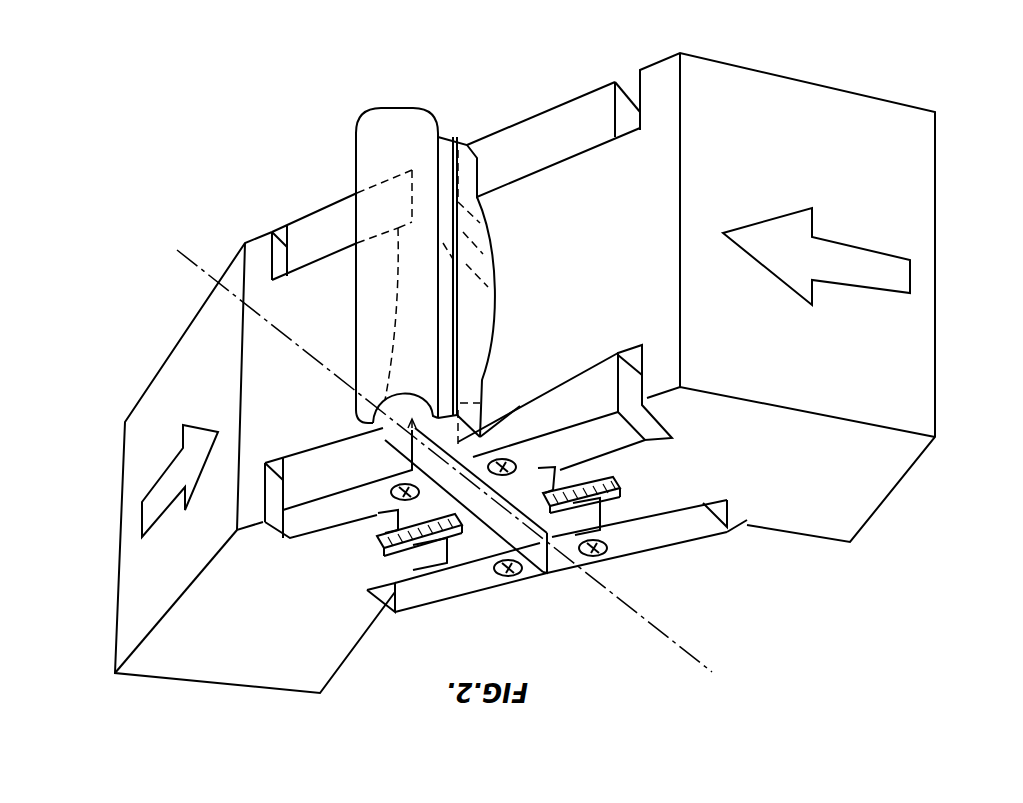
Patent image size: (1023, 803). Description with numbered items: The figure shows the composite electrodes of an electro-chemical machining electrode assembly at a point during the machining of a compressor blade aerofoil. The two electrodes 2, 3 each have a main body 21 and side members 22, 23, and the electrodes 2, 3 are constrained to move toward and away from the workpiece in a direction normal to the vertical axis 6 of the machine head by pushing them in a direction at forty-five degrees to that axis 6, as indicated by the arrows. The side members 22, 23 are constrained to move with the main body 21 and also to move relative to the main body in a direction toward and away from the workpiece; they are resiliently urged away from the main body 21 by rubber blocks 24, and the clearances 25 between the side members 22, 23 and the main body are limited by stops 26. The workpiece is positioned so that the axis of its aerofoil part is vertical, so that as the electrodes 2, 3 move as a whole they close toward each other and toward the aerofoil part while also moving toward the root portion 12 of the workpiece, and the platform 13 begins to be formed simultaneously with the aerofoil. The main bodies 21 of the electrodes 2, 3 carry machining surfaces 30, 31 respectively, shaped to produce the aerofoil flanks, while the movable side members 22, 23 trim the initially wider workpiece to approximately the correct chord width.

The electrode 2 is at (872, 518).
The electrode 3 is at (175, 685).
The vertical axis 6 is at (657, 632).
The root portion 12 is at (372, 423).
The platform 13 is at (483, 420).
The main body 21 is at (788, 456).
The side member 22 is at (542, 120).
The side member 23 is at (337, 212).
The rubber block 24 is at (605, 480).
The clearance 25 is at (282, 233).
The stop 26 is at (515, 463).
The machining surface 30 is at (499, 323).
The machining surface 31 is at (355, 305).